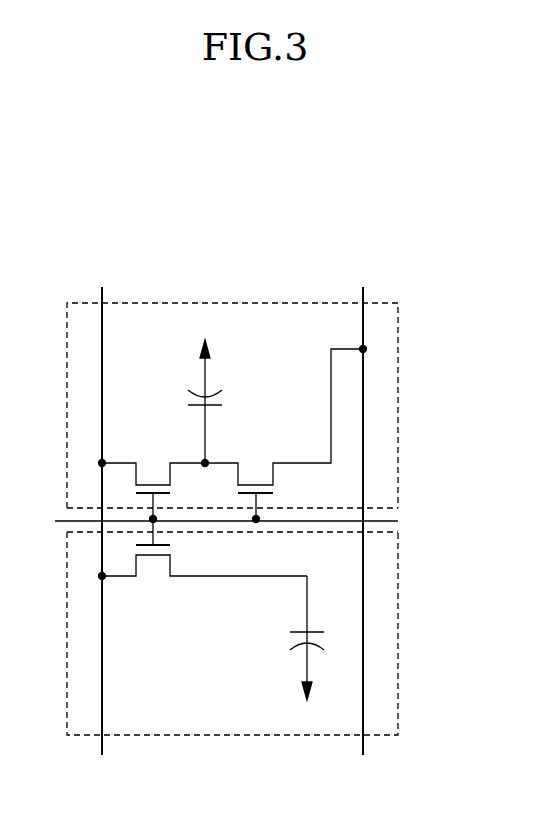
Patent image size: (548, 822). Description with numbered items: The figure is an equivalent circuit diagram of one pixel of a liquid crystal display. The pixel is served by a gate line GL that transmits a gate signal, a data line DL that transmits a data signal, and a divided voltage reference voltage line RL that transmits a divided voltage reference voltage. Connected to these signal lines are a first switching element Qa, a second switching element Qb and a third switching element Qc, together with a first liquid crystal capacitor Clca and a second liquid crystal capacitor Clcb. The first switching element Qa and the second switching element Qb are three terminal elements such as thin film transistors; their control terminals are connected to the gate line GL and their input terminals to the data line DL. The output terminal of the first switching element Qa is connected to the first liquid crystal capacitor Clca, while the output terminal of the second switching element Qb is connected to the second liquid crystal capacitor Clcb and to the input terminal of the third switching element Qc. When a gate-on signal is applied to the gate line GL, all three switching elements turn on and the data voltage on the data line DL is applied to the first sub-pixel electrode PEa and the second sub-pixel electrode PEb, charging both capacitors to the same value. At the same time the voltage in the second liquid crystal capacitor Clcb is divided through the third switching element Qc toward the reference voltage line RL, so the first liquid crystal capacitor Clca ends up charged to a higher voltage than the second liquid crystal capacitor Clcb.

The data line DL is at (102, 509).
The divided voltage reference voltage line RL is at (363, 509).
The gate line GL is at (212, 521).
The first sub-pixel electrode PEa is at (398, 632).
The second sub-pixel electrode PEb is at (398, 405).
The first switching element Qa is at (203, 561).
The second switching element Qb is at (152, 481).
The third switching element Qc is at (284, 434).
The first liquid crystal capacitor Clca is at (232, 401).
The second liquid crystal capacitor Clcb is at (279, 638).